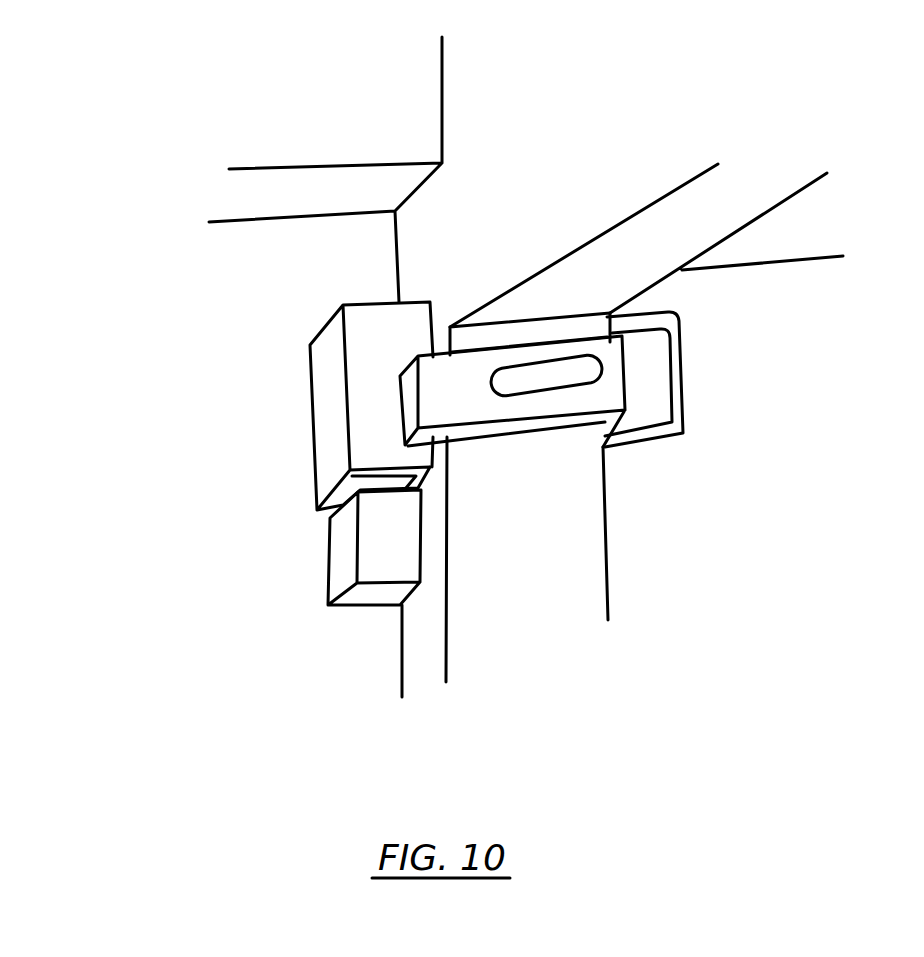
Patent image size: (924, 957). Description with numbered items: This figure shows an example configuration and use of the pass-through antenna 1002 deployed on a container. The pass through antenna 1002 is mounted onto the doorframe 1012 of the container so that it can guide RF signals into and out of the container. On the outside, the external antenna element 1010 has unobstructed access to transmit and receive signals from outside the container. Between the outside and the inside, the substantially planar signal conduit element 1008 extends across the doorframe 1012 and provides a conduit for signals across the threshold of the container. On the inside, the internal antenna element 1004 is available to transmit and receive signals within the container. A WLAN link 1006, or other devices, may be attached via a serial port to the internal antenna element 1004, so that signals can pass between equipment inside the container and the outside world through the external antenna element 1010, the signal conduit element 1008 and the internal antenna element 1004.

The pass-through antenna 1002 is at (243, 347).
The internal antenna element 1004 is at (287, 452).
The WLAN link 1006 is at (300, 573).
The signal conduit element 1008 is at (580, 398).
The external antenna element 1010 is at (663, 397).
The doorframe 1012 is at (570, 590).